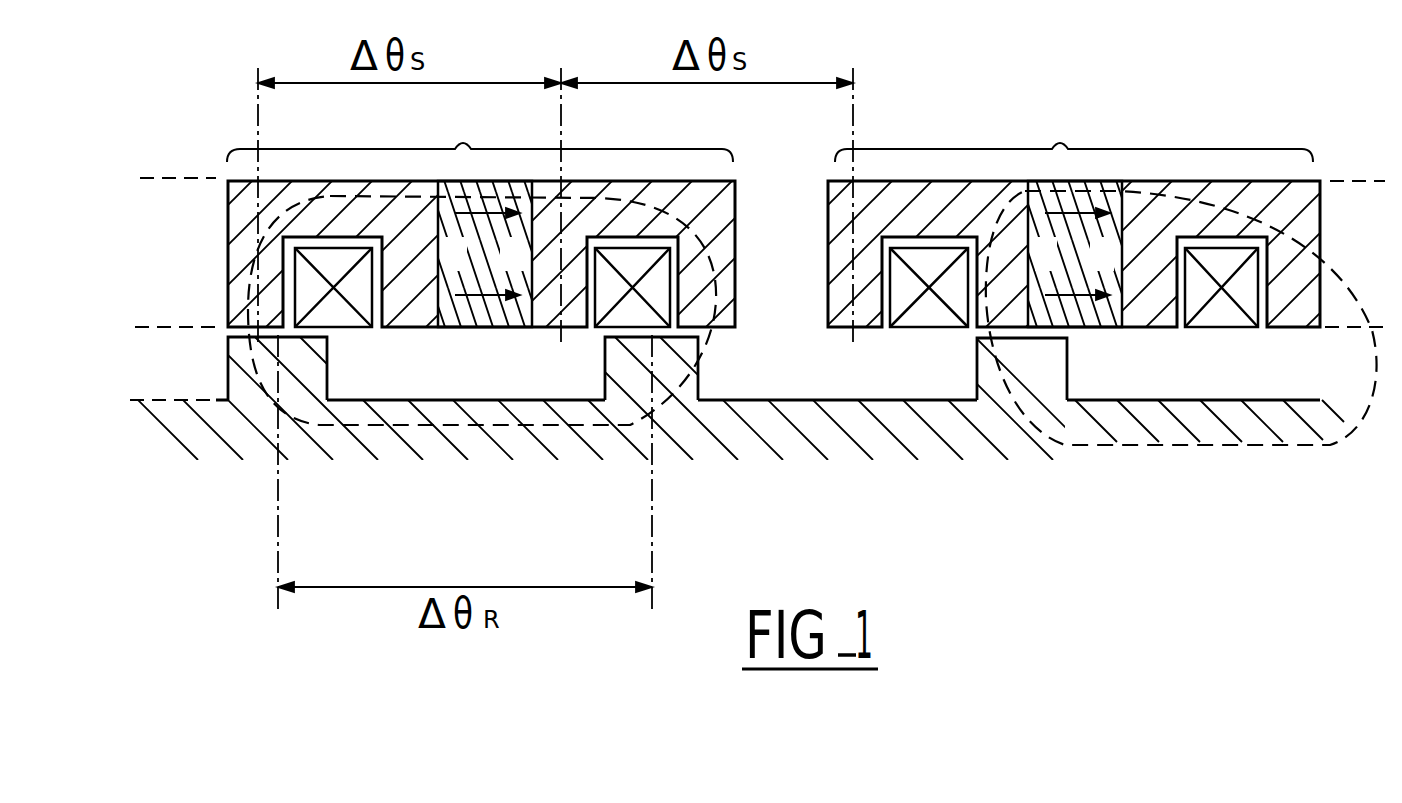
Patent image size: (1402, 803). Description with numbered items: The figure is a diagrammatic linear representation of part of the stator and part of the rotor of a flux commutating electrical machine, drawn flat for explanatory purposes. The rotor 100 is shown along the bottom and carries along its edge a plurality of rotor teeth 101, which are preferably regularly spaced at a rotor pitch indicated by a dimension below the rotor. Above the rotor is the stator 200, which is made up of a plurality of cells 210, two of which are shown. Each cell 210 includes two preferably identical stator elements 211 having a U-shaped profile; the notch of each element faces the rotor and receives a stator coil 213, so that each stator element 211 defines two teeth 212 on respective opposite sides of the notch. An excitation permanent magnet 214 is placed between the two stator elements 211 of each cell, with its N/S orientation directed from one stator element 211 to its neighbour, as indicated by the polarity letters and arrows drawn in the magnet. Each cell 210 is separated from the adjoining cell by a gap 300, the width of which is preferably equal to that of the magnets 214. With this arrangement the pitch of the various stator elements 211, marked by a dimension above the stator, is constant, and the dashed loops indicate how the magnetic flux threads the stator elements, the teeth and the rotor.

The rotor 100 is at (709, 429).
The rotor teeth 101 is at (327, 372).
The stator 200 is at (762, 274).
The cell 210 is at (762, 275).
The stator element 211 is at (245, 219).
The teeth 212 is at (846, 326).
The stator coil 213 is at (923, 252).
The excitation permanent magnet 214 is at (1090, 330).
The gap 300 is at (810, 278).